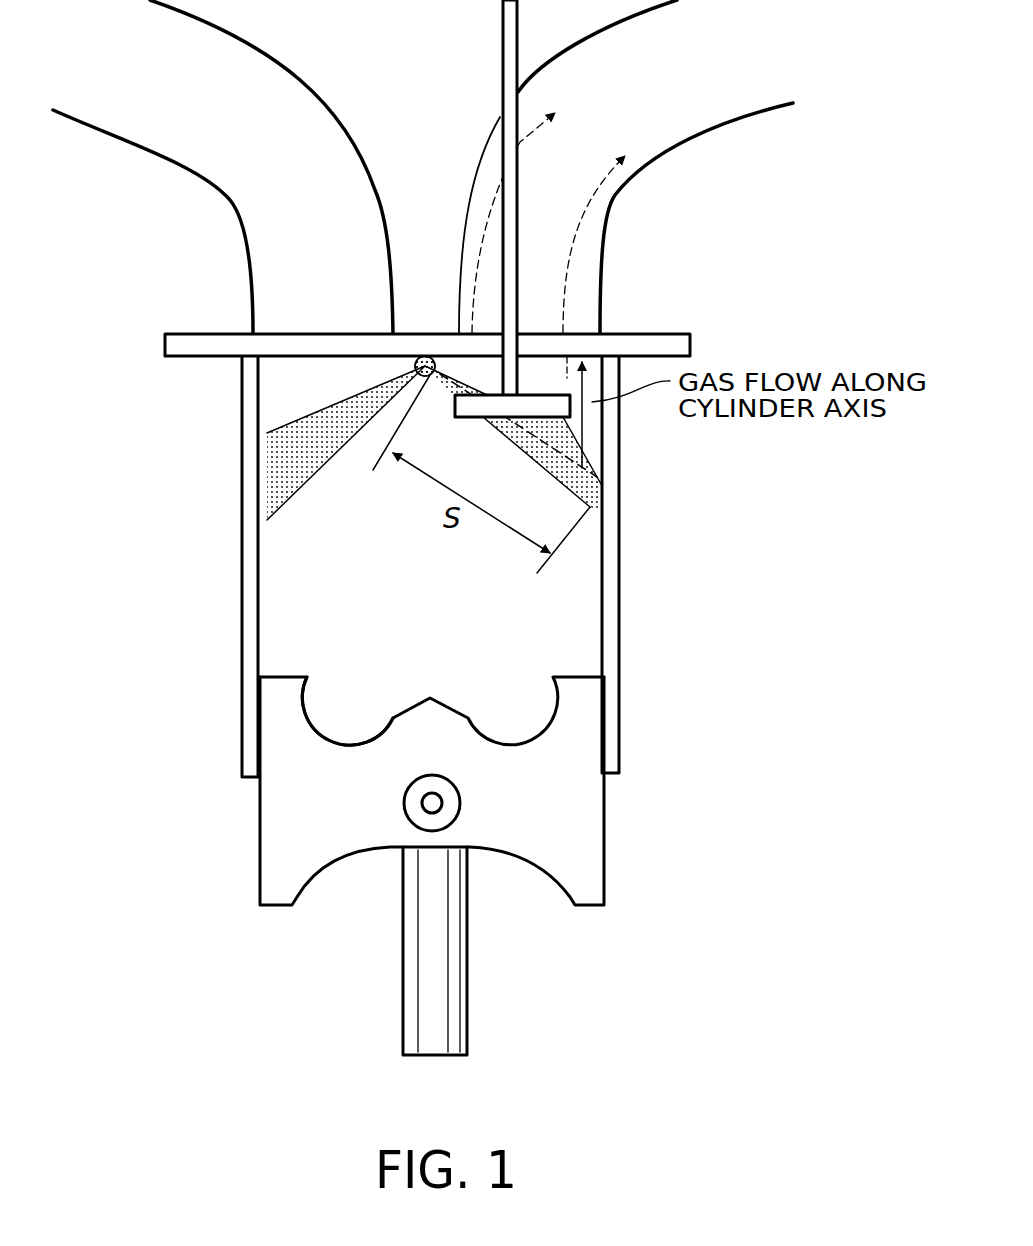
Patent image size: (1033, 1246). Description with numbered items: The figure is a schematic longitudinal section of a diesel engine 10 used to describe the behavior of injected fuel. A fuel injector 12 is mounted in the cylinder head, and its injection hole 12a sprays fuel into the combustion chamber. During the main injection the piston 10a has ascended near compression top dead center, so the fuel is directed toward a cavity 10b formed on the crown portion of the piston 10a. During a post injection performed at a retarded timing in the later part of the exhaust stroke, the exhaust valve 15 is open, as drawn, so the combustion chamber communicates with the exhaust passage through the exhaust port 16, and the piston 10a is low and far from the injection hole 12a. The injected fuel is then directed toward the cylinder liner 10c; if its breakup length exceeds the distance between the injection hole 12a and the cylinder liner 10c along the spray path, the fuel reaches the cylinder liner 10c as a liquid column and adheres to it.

The diesel engine 10 is at (158, 511).
The piston 10a is at (282, 821).
The cavity 10b is at (307, 725).
The cylinder liner 10c is at (603, 561).
The fuel injector 12 is at (421, 346).
The injection hole 12a is at (405, 363).
The exhaust valve 15 is at (468, 418).
The exhaust port 16 is at (593, 214).